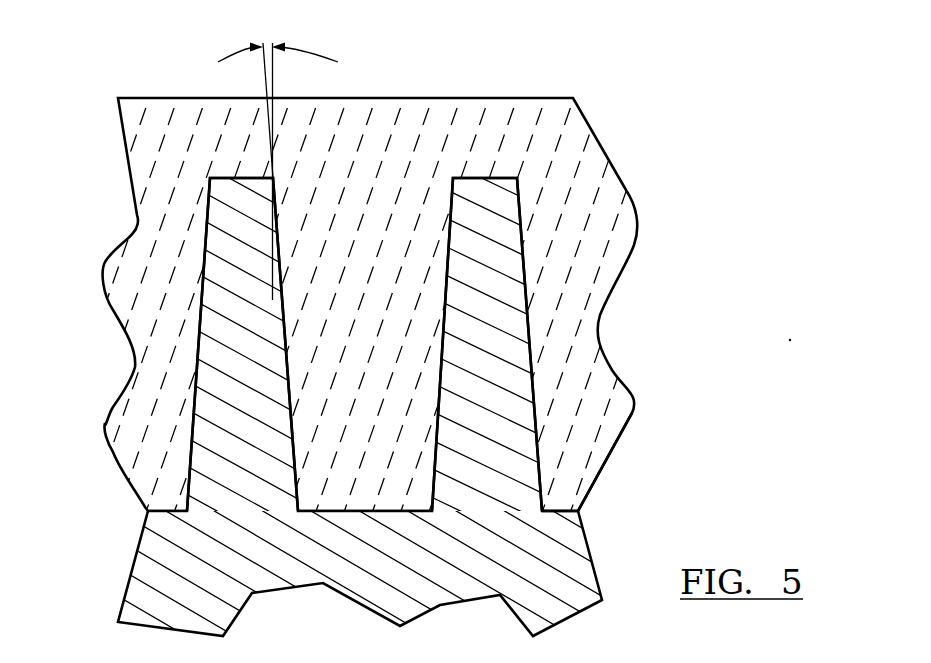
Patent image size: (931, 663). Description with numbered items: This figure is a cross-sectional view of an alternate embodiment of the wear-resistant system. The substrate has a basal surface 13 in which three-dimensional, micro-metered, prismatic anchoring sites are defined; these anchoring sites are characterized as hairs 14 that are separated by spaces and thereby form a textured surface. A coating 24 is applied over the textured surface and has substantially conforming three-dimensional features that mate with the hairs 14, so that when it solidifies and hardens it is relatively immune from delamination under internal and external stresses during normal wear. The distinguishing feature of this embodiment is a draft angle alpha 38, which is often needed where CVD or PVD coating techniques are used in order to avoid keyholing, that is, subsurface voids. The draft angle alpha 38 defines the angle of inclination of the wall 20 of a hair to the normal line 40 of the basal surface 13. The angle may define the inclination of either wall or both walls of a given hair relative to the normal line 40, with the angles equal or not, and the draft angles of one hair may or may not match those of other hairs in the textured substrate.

The surface 13 is at (562, 511).
The hairs 14 is at (483, 483).
The wall 20 is at (298, 432).
The coating 24 is at (147, 162).
The draft angle alpha 38 is at (378, 47).
The normal line 40 is at (273, 78).